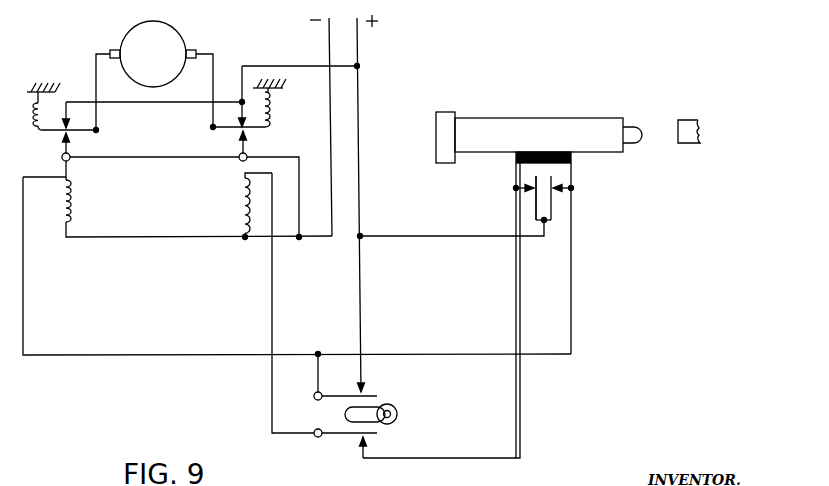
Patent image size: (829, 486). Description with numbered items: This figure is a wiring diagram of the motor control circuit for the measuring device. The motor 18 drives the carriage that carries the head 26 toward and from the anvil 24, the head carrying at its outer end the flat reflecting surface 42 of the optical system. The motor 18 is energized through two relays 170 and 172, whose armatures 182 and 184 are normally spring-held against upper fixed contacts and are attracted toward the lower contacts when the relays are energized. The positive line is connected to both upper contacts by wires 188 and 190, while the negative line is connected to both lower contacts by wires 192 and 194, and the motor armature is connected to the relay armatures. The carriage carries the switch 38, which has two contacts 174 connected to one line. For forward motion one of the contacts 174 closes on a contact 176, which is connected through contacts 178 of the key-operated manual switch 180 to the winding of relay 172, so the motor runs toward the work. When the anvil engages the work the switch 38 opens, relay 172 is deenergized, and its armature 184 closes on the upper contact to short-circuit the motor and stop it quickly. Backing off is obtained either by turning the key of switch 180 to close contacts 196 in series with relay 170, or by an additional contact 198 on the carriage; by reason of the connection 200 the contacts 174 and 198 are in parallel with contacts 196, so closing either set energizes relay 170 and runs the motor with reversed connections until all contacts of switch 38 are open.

The motor 18 is at (190, 28).
The anvil 24 is at (693, 120).
The head 26 is at (558, 118).
The switch 38 is at (558, 208).
The flat reflecting surface 42 is at (432, 118).
The relay 170 is at (75, 213).
The relay 172 is at (238, 198).
The contacts 174 is at (543, 193).
The contact 176 is at (527, 184).
The contacts 178 is at (355, 437).
The key-operated manual switch 180 is at (400, 412).
The armature 182 is at (85, 131).
The armature 184 is at (250, 129).
The wire 188 is at (268, 62).
The wire 190 is at (155, 103).
The wire 192 is at (300, 210).
The wire 194 is at (168, 156).
The contacts 196 is at (365, 392).
The contact 198 is at (562, 186).
The connection 200 is at (163, 357).